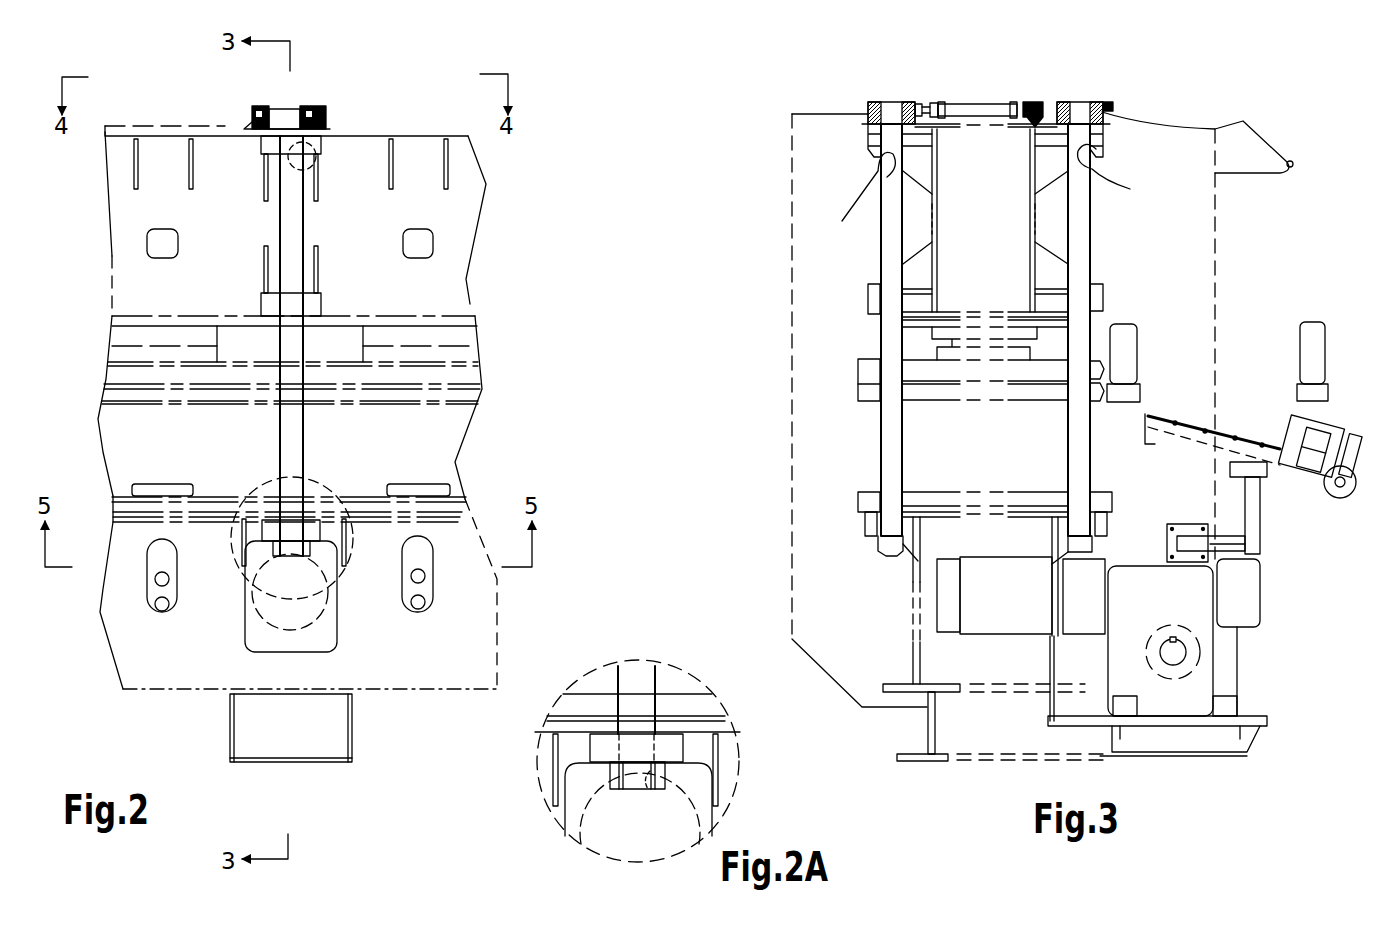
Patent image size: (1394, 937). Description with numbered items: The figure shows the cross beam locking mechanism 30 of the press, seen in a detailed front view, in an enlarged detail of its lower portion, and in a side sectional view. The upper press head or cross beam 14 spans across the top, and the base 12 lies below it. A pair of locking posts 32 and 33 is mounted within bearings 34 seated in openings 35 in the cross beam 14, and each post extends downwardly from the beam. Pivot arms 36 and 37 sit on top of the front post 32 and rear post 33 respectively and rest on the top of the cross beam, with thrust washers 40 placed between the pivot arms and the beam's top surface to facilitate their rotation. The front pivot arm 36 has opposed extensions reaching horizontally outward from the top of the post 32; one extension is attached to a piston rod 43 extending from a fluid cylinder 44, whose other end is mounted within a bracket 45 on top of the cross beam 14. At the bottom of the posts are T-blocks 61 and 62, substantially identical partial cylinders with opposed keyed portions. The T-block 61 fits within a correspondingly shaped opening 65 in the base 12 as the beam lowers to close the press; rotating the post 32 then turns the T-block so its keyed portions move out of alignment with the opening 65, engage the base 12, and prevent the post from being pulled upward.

In FIG. 2, the base 12 is at (443, 637).
In FIG. 2A, the base 12 is at (570, 757).
In FIG. 3, the base 12 is at (928, 598).
In FIG. 2, the cross beam 14 is at (435, 210).
In FIG. 3, the cross beam 14 is at (965, 275).
In FIG. 2, the locking mechanism 30 is at (332, 92).
In FIG. 2, the front locking post 32 is at (290, 437).
In FIG. 2A, the front locking post 32 is at (637, 678).
In FIG. 3, the front locking post 32 is at (890, 450).
In FIG. 3, the rear locking post 33 is at (1078, 463).
In FIG. 3, the bearings 34 is at (868, 138).
In FIG. 2, the openings 35 is at (318, 166).
In FIG. 3, the openings 35 is at (984, 189).
In FIG. 2, the front pivot arm 36 is at (300, 128).
In FIG. 3, the front pivot arm 36 is at (882, 103).
In FIG. 3, the rear pivot arm 37 is at (1092, 103).
In FIG. 2, the thrust washers 40 is at (250, 132).
In FIG. 3, the thrust washers 40 is at (868, 120).
In FIG. 3, the piston rod 43 is at (928, 103).
In FIG. 3, the fluid cylinder 44 is at (982, 104).
In FIG. 3, the bracket 45 is at (1032, 103).
In FIG. 2, the T-block 61 is at (291, 553).
In FIG. 2A, the T-block 61 is at (612, 790).
In FIG. 3, the T-block 61 is at (882, 550).
In FIG. 3, the T-block 62 is at (1098, 545).
In FIG. 2A, the opening 65 is at (648, 792).